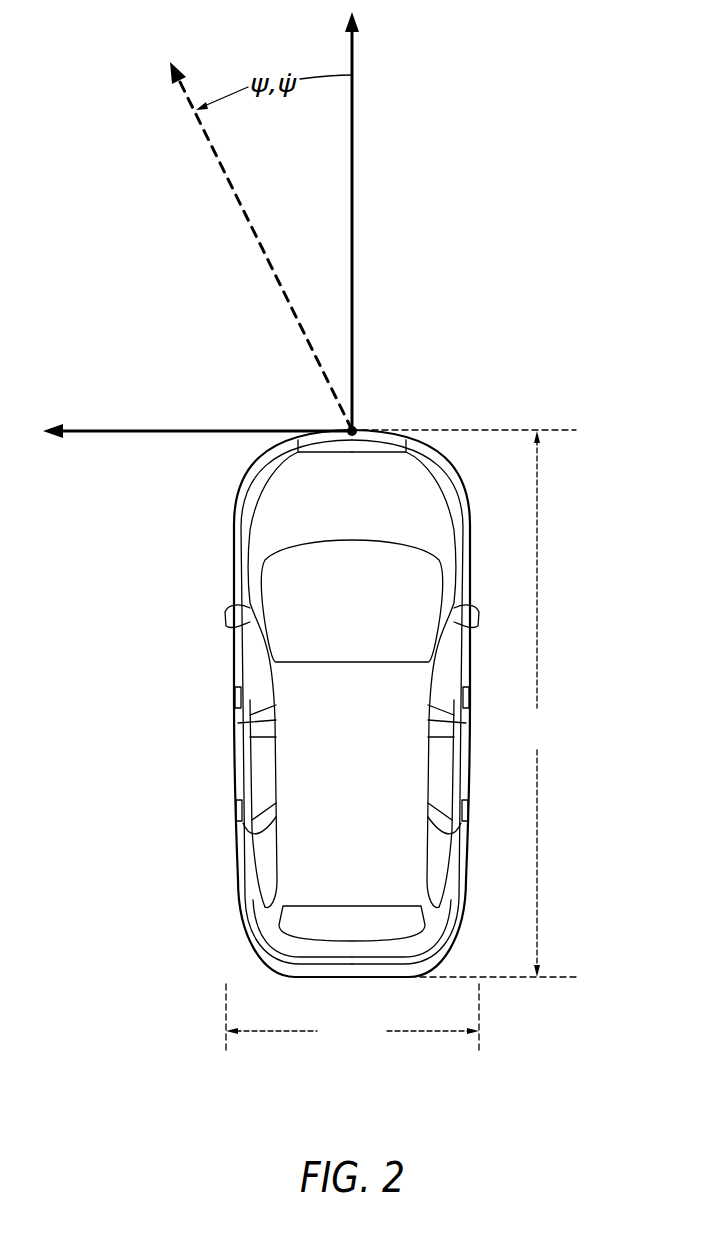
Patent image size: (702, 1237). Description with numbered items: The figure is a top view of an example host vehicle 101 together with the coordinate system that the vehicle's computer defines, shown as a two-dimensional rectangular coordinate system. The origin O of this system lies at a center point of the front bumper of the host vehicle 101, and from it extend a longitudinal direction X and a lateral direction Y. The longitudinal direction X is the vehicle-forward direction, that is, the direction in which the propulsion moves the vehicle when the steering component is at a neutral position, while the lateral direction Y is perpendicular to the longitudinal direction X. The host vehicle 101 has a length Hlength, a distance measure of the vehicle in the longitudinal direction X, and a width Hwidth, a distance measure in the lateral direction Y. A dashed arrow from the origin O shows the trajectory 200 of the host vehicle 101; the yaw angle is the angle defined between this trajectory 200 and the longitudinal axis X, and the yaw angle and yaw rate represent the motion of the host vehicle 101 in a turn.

The host vehicle 101 is at (369, 432).
The trajectory 200 is at (238, 243).
The longitudinal direction X is at (366, 219).
The lateral direction Y is at (197, 455).
The origin O is at (352, 457).
The length Hlength is at (469, 703).
The width Hwidth is at (352, 1017).